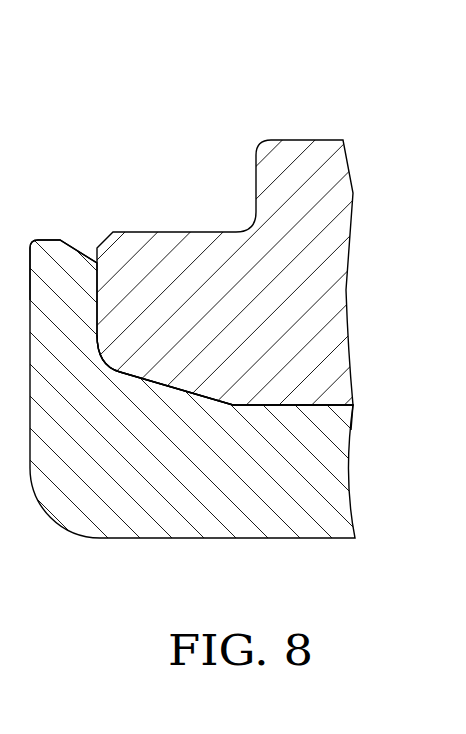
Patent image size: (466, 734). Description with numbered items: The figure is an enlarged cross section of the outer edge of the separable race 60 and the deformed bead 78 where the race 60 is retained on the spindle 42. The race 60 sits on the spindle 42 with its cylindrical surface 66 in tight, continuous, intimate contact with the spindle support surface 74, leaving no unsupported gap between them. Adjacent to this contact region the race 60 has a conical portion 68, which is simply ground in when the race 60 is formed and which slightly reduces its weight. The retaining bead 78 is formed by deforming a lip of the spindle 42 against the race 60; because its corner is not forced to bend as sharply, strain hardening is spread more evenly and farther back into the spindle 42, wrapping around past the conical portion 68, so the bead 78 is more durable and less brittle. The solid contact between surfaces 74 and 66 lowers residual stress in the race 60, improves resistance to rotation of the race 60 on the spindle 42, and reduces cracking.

The race 60 is at (330, 130).
The spindle 42 is at (348, 550).
The bead 78 is at (34, 258).
The conical portion 68 is at (180, 390).
The cylindrical surface 66 is at (295, 405).
The spindle support surface 74 is at (333, 405).